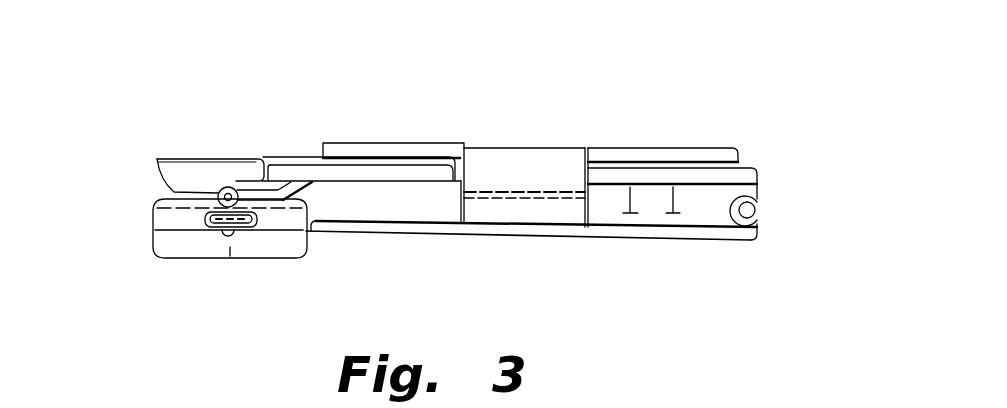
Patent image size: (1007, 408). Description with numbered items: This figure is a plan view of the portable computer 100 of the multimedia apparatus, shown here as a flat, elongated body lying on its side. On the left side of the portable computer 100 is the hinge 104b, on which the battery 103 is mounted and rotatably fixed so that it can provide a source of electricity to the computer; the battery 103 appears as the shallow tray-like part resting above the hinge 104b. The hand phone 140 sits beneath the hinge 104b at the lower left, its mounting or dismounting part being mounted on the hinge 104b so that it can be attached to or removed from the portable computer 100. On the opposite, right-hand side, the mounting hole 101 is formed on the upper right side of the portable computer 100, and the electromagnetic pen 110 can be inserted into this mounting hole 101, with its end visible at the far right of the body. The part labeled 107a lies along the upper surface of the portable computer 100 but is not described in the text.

The portable computer 100 is at (450, 129).
The mounting hole 101 is at (743, 229).
The battery 103 is at (189, 157).
The hinge 104b is at (232, 188).
The upper cover 107a is at (651, 147).
The electromagnetic pen 110 is at (755, 208).
The hand phone 140 is at (154, 242).